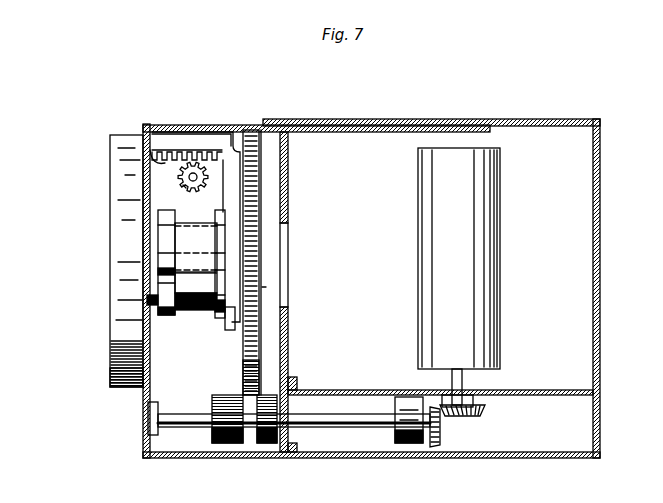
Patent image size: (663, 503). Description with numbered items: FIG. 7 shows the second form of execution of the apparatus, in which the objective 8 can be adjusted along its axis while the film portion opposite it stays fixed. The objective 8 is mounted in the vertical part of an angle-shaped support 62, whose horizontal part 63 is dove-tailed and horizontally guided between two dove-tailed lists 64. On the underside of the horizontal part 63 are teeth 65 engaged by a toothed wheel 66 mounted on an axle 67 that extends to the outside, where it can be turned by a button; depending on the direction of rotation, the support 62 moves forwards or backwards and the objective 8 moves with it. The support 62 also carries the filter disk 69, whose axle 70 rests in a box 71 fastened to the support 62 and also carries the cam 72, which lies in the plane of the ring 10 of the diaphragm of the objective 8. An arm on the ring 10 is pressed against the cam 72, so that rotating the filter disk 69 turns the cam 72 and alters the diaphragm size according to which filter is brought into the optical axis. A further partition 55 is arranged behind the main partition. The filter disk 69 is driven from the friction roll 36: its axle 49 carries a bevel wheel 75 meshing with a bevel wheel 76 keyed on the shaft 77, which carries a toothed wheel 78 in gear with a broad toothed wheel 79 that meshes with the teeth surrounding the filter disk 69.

The objective 8 is at (130, 348).
The ring of the diaphragm 10 is at (147, 302).
The friction roll 36 is at (488, 180).
The axle 49 is at (465, 380).
The partition 55 is at (285, 170).
The support 62 is at (288, 287).
The horizontal part 63 is at (158, 156).
The dove-tailed lists 64 is at (188, 142).
The teeth 65 is at (153, 168).
The toothed wheel 66 is at (183, 185).
The axle 67 is at (188, 177).
The filter disk 69 is at (258, 235).
The axle 70 is at (197, 265).
The box 71 is at (188, 248).
The cam 72 is at (168, 255).
The bevel wheel 75 is at (485, 410).
The bevel wheel 76 is at (435, 445).
The shaft 77 is at (345, 430).
The toothed wheel 78 is at (255, 445).
The broad toothed wheel 79 is at (225, 443).